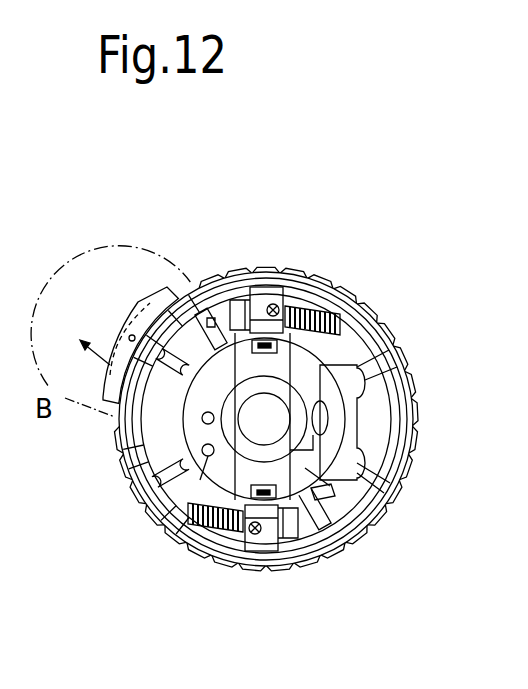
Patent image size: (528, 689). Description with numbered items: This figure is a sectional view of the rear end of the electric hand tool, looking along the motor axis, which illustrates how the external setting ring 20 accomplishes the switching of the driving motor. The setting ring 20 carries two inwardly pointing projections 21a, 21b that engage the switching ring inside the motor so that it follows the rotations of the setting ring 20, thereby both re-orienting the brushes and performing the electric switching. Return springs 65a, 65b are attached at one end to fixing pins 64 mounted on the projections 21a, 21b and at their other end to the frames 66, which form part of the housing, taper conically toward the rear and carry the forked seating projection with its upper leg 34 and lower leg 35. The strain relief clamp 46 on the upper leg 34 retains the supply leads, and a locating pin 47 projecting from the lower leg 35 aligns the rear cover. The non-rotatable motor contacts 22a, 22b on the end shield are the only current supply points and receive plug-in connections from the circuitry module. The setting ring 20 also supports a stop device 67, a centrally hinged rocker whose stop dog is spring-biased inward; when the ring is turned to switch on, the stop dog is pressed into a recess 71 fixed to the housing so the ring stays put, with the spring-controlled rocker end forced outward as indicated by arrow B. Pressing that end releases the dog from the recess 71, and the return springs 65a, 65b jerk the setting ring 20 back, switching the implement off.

The external setting ring 20 is at (127, 488).
The inwardly pointing projection 21a is at (257, 297).
The inwardly pointing projection 21b is at (268, 535).
The external plug-in contact 22a is at (225, 298).
The external plug-in contact 22b is at (310, 495).
The upper leg 34 is at (362, 513).
The lower leg 35 is at (112, 462).
The strain relief clamp 46 is at (343, 423).
The locating pin 47 is at (159, 527).
The fixing pin 64 is at (273, 303).
The return spring 65a is at (322, 310).
The return spring 65b is at (217, 515).
The frame 66 is at (387, 327).
The stop device 67 is at (120, 323).
The recess 71 is at (203, 323).